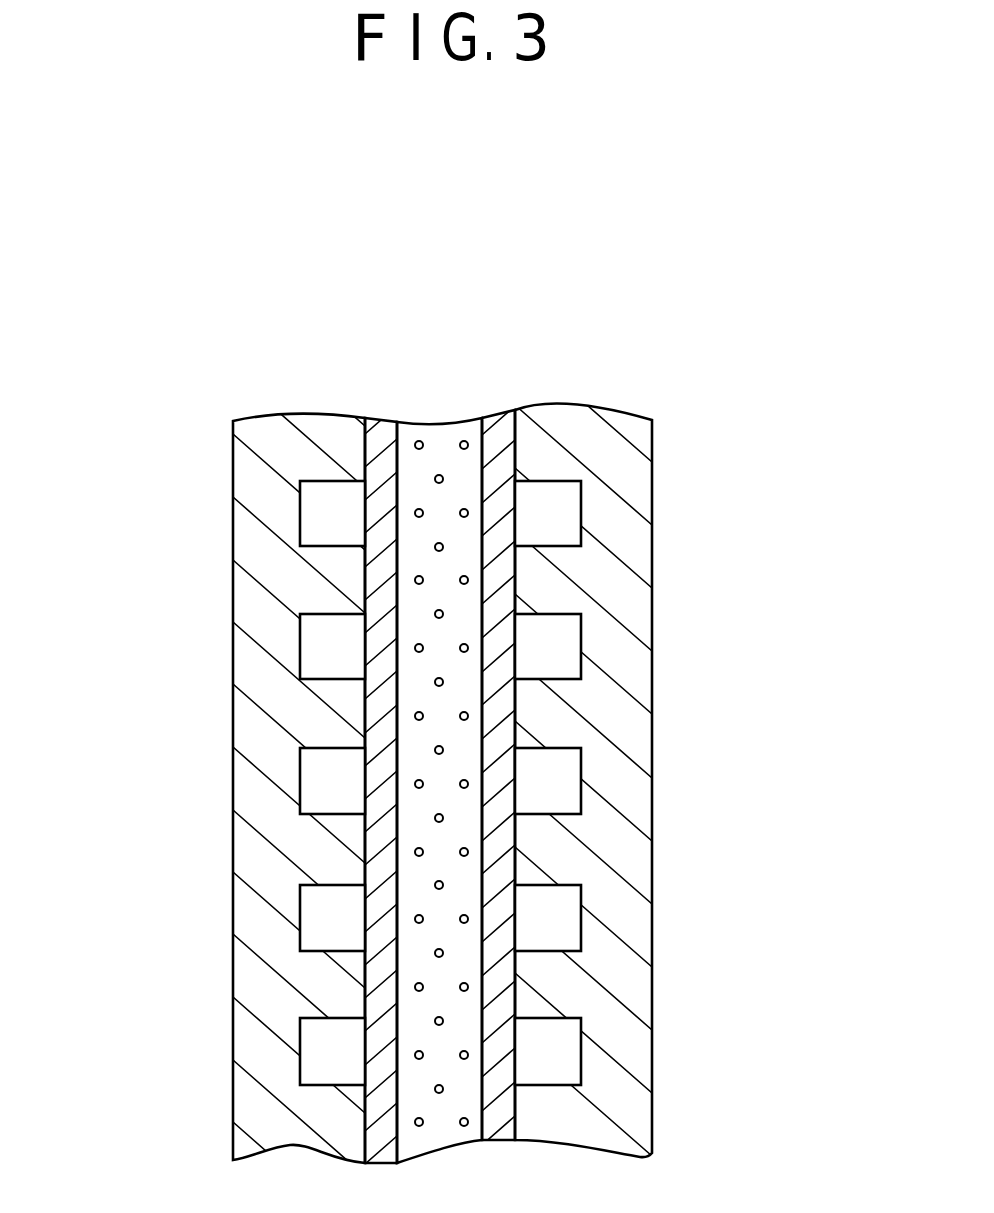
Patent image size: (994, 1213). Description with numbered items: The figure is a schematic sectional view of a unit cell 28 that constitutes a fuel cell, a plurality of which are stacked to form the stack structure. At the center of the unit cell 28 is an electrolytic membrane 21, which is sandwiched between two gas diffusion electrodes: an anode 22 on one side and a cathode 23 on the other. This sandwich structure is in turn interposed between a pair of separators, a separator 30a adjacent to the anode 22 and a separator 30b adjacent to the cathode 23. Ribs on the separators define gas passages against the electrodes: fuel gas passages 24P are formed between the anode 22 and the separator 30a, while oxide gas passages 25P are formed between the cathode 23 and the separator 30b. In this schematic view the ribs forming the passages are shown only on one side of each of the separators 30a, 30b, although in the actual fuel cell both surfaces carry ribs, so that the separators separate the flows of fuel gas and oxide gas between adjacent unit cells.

The unit cell 28 is at (722, 323).
The separator 30b is at (295, 412).
The cathode 23 is at (382, 416).
The electrolytic membrane 21 is at (438, 423).
The anode 22 is at (500, 411).
The separator 30a is at (597, 401).
The oxide gas passages 25P is at (307, 633).
The fuel gas passages 24P is at (568, 643).